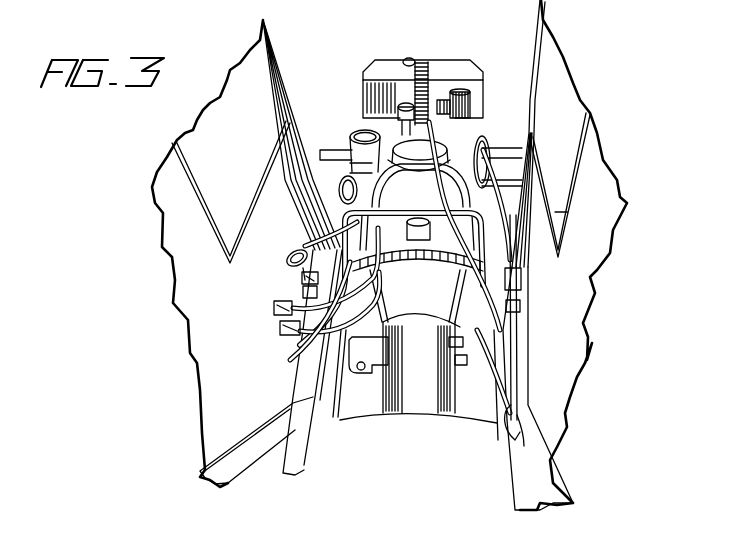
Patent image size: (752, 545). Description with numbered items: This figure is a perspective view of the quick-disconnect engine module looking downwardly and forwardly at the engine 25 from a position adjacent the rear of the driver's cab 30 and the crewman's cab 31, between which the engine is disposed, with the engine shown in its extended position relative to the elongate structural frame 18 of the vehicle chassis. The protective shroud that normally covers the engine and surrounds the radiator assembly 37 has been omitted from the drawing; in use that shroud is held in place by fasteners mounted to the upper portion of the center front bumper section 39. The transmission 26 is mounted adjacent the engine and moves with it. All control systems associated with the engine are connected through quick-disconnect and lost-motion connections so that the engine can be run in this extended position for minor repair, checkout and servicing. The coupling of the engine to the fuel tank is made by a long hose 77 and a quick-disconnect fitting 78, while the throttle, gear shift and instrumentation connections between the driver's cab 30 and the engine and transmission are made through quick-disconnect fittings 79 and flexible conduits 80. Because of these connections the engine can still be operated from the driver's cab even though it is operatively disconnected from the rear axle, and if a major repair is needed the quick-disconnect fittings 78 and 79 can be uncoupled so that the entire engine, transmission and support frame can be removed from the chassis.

The structural frame 18 is at (303, 463).
The engine 25 is at (493, 82).
The transmission 26 is at (408, 408).
The driver's cab 30 is at (283, 80).
The crewman's cab 31 is at (600, 167).
The radiator assembly 37 is at (390, 66).
The center front bumper section 39 is at (332, 150).
The long hose 77 is at (497, 327).
The quick-disconnect fitting 78 is at (445, 127).
The quick-disconnect fittings 79 is at (298, 327).
The flexible conduits 80 is at (308, 327).